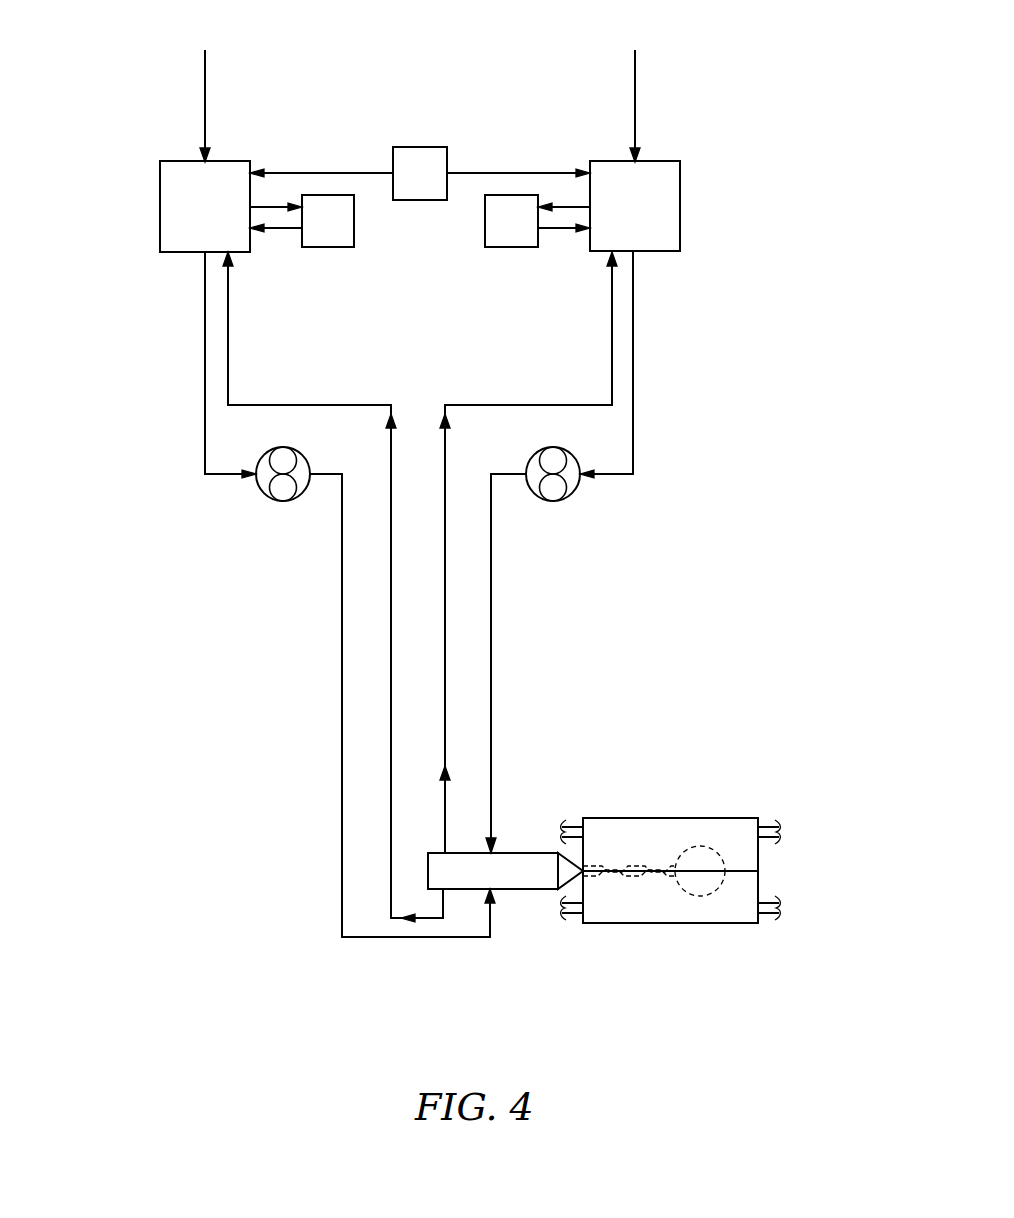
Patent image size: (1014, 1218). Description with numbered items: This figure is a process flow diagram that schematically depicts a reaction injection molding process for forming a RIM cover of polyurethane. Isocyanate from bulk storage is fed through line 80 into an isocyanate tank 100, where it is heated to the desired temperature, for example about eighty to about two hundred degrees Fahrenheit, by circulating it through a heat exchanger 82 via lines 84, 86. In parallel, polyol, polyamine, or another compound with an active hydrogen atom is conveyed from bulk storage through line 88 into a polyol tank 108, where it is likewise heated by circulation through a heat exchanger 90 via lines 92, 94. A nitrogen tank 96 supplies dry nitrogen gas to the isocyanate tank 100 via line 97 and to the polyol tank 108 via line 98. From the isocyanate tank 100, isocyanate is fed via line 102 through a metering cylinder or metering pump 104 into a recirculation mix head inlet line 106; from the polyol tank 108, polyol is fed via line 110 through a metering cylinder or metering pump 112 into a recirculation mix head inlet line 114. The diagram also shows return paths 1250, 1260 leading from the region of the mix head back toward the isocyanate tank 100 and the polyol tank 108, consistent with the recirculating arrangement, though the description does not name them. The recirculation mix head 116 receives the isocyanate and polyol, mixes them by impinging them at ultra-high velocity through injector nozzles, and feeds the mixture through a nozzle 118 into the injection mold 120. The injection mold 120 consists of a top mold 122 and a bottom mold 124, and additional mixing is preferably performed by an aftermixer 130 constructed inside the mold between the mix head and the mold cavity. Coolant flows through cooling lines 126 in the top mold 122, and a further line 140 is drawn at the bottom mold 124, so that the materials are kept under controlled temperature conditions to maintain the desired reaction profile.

The line 80 is at (205, 78).
The line 88 is at (635, 78).
The isocyanate tank 100 is at (160, 207).
The polyol tank 108 is at (680, 207).
The nitrogen tank 96 is at (420, 147).
The line 97 is at (347, 173).
The line 98 is at (495, 173).
The line 84 is at (267, 205).
The line 86 is at (292, 233).
The heat exchanger 82 is at (354, 222).
The line 92 is at (575, 207).
The line 94 is at (548, 233).
The heat exchanger 90 is at (485, 225).
The line 102 is at (204, 372).
The isocyanate recirculation line 1250 is at (292, 405).
The polyol recirculation line 1260 is at (610, 361).
The line 110 is at (636, 372).
The metering pump 104 is at (262, 494).
The metering pump 112 is at (560, 500).
The recirculation mix head inlet line 106 is at (342, 716).
The recirculation mix head inlet line 114 is at (493, 653).
The recirculation mix head 116 is at (472, 873).
The nozzle 118 is at (556, 890).
The injection mold 120 is at (728, 808).
The top mold 122 is at (653, 828).
The bottom mold 124 is at (658, 912).
The aftermixer 130 is at (595, 868).
The cooling lines 126 is at (768, 828).
The guide pin 140 is at (770, 915).